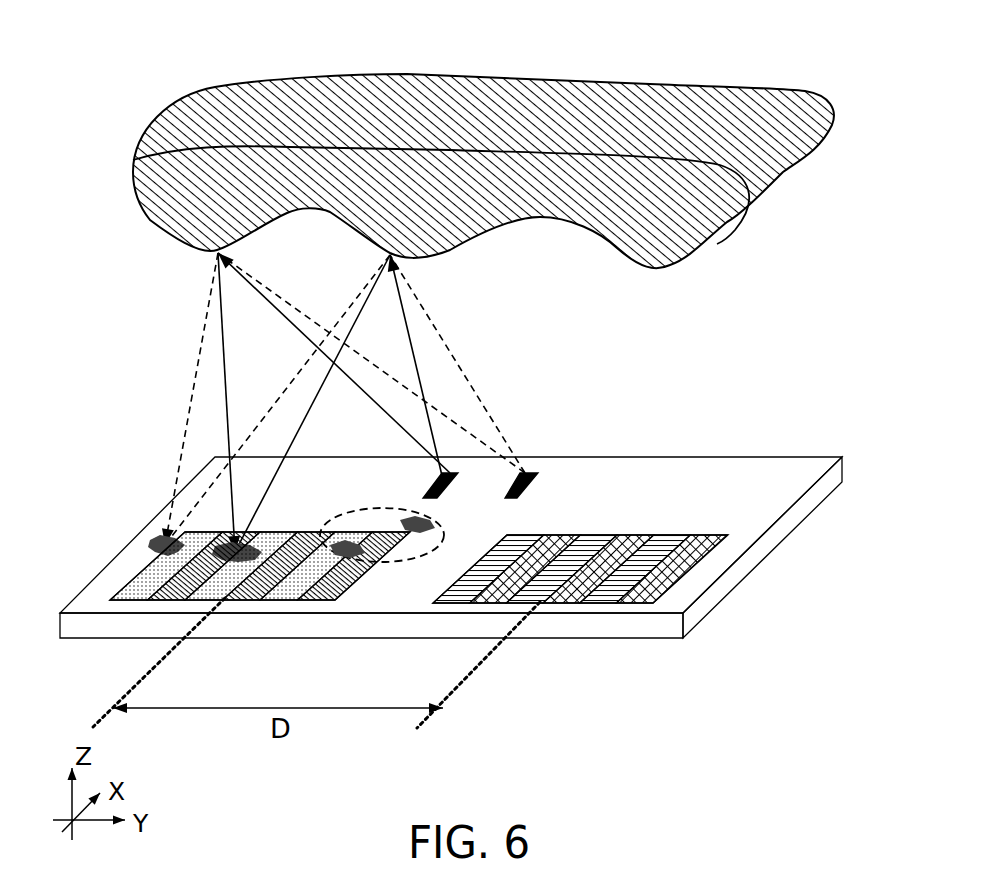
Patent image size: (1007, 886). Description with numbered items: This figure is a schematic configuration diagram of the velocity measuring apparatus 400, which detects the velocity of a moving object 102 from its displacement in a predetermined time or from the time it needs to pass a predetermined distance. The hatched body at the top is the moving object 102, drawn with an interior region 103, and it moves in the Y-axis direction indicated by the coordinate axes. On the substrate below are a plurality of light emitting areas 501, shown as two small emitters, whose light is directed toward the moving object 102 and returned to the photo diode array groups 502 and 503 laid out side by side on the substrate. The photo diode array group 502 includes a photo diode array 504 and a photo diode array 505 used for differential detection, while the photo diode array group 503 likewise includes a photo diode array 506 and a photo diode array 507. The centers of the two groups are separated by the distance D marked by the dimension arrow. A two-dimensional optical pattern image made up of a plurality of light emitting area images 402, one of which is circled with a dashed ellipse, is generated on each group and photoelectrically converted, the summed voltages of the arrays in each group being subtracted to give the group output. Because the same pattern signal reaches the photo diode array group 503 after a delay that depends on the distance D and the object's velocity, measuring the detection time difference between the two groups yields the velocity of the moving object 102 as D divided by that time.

The moving object 102 is at (487, 212).
The blood vessel / internal tissue 103 is at (237, 207).
The velocity measuring apparatus 400 is at (747, 347).
The light emitting areas 501 is at (437, 480).
The photo diode array group 502 is at (227, 568).
The photo diode array group 503 is at (659, 556).
The photo diode array 504 is at (138, 587).
The photo diode array 505 is at (212, 548).
The photo diode array 506 is at (670, 535).
The photo diode array 507 is at (688, 536).
The light emitting area images 402 is at (437, 517).